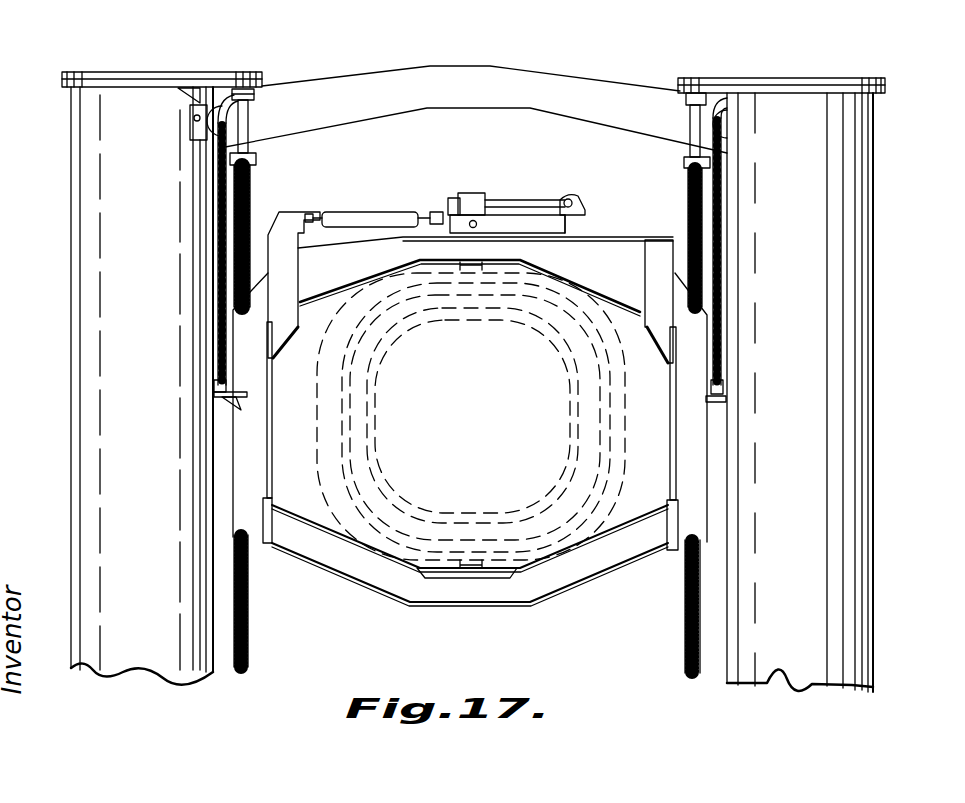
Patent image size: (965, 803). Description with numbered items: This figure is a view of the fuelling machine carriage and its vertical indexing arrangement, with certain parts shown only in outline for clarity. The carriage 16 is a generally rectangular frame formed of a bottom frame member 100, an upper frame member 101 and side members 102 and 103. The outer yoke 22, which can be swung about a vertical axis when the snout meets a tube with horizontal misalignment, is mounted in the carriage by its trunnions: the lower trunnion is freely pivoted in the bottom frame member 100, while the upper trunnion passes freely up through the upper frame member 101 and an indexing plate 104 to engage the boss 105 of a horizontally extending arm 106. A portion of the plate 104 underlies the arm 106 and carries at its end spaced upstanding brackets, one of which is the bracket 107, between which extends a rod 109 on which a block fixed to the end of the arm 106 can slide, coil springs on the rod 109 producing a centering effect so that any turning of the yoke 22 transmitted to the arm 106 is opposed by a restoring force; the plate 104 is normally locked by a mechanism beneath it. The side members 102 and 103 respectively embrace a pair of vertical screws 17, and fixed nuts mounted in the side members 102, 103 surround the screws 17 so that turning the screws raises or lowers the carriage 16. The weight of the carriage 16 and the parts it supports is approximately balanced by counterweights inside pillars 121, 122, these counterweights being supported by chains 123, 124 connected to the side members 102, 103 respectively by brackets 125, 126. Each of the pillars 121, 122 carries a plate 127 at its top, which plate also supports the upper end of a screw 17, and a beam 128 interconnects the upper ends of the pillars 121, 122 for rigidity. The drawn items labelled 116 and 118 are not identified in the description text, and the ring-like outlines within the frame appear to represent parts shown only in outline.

The carriage 16 is at (473, 637).
The vertical screws 17 is at (252, 182).
The outer yoke 22 is at (370, 523).
The bottom frame member 100 is at (470, 391).
The upper frame member 101 is at (348, 248).
The side member 102 is at (255, 482).
The side member 103 is at (681, 458).
The indexing plate 104 is at (504, 220).
The boss 105 is at (460, 203).
The horizontally extending arm 106 is at (538, 200).
The upstanding bracket 107 is at (582, 200).
The rod 109 is at (573, 214).
The cylinder 116 is at (389, 215).
The bracket 118 is at (288, 216).
The pillar 121 is at (95, 128).
The pillar 122 is at (845, 156).
The chain 123 is at (226, 188).
The chain 124 is at (715, 184).
The bracket 125 is at (232, 392).
The bracket 126 is at (724, 395).
The plate 127 is at (133, 58).
The beam 128 is at (501, 78).